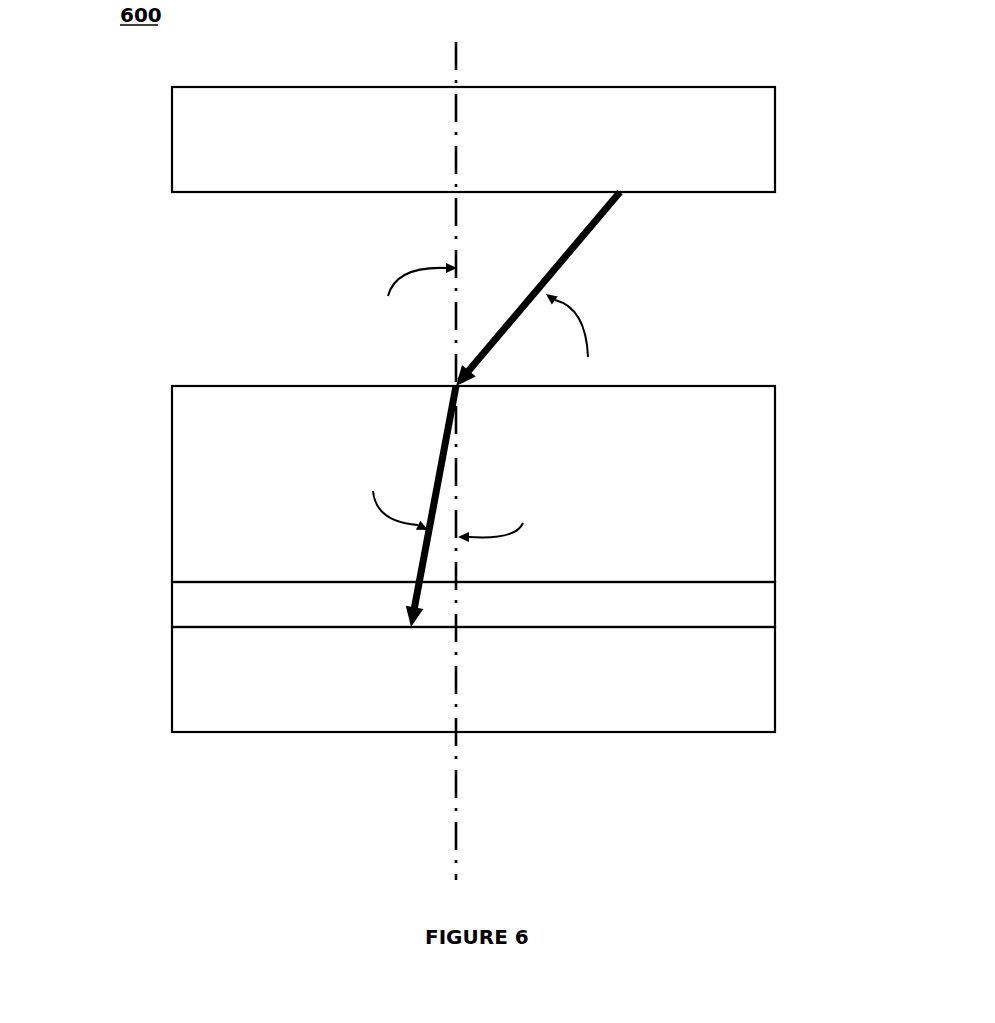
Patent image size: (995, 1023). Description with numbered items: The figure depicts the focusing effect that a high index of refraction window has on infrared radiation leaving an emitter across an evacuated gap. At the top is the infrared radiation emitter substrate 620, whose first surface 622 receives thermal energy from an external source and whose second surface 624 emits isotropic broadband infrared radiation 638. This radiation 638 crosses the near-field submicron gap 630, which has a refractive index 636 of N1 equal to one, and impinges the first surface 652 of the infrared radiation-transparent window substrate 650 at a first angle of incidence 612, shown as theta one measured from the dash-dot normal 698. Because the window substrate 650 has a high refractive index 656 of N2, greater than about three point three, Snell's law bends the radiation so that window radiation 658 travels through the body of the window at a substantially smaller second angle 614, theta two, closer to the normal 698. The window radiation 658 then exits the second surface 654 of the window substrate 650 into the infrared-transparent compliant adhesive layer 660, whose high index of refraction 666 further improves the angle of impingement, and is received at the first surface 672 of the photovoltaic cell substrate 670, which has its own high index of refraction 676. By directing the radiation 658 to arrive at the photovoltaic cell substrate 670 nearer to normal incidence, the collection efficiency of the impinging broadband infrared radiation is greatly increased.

The infrared radiation emitter substrate 620 is at (157, 138).
The first surface of the infrared radiation emitter substrate 622 is at (746, 86).
The second surface of the infrared radiation emitter substrate 624 is at (746, 193).
The near-field submicron gap 630 is at (186, 252).
The refractive index of the submicron gap 636 is at (705, 297).
The broadband infrared radiation 638 is at (602, 235).
The angle of incidence 612 is at (345, 300).
The window radiation 658 is at (427, 462).
The second angle of incidence 614 is at (345, 478).
The infrared radiation-transparent window substrate 650 is at (157, 513).
The first surface of the infrared radiation-transparent window substrate 652 is at (753, 387).
The refractive index of the window substrate 656 is at (707, 500).
The second surface of the infrared radiation-transparent window substrate 654 is at (753, 580).
The infrared-transparent compliant adhesive layer 660 is at (157, 604).
The refractive index of the compliant adhesive layer 666 is at (720, 612).
The photovoltaic cell substrate 670 is at (157, 688).
The first surface of the photovoltaic cell substrate 672 is at (753, 628).
The refractive index of the photovoltaic cell substrate 676 is at (720, 695).
The normal angle 698 is at (442, 792).